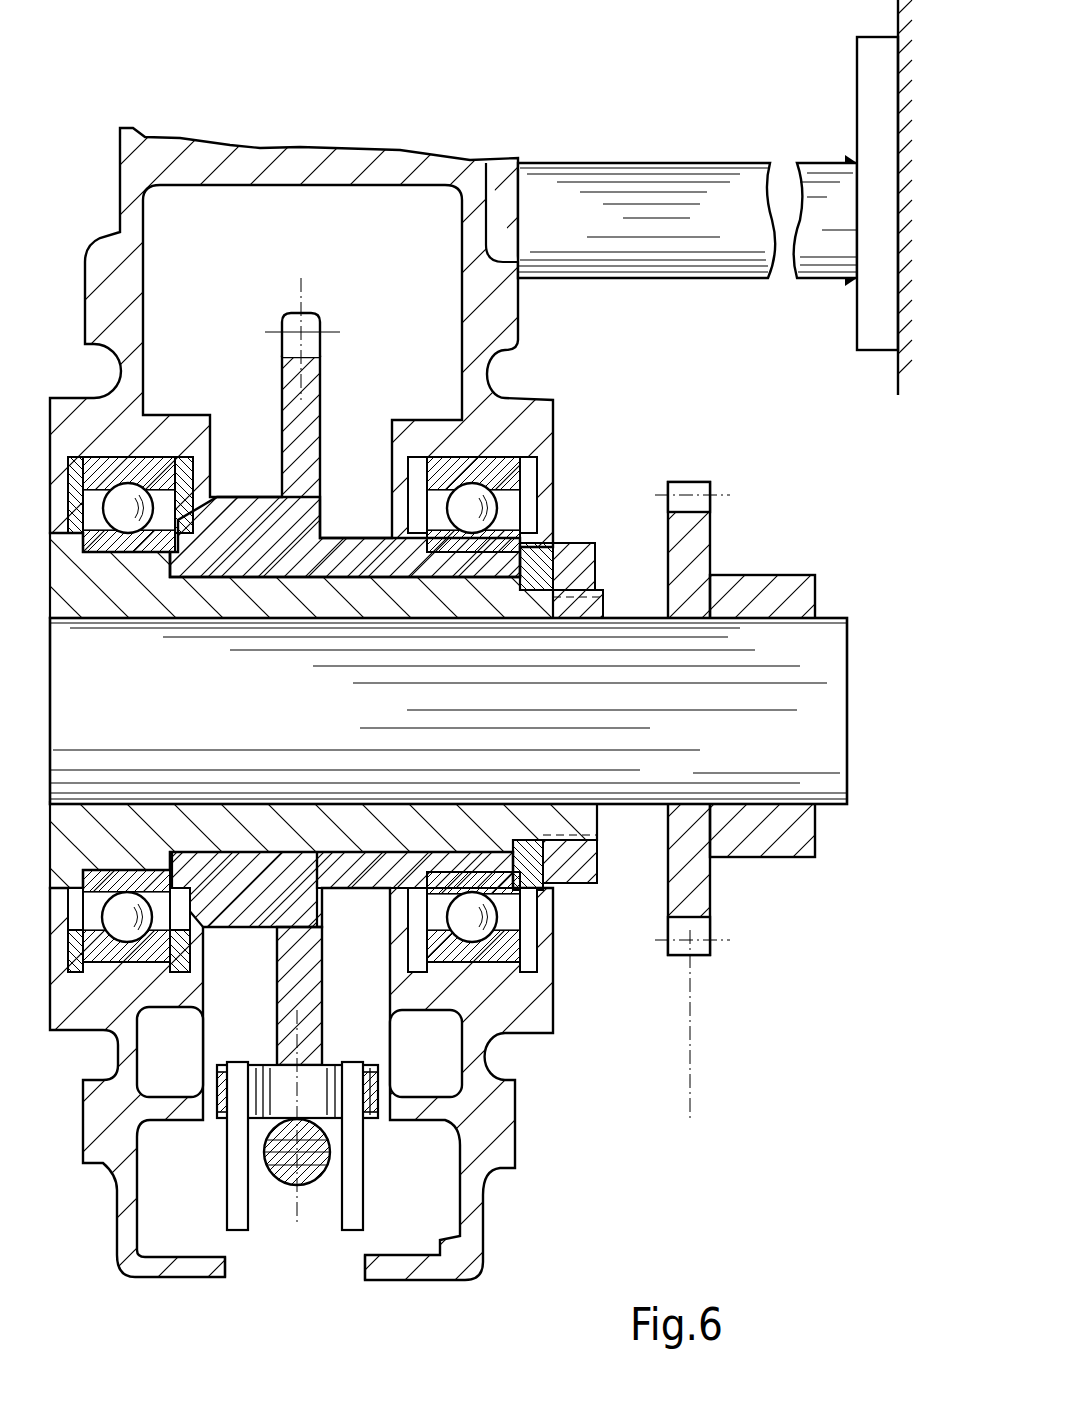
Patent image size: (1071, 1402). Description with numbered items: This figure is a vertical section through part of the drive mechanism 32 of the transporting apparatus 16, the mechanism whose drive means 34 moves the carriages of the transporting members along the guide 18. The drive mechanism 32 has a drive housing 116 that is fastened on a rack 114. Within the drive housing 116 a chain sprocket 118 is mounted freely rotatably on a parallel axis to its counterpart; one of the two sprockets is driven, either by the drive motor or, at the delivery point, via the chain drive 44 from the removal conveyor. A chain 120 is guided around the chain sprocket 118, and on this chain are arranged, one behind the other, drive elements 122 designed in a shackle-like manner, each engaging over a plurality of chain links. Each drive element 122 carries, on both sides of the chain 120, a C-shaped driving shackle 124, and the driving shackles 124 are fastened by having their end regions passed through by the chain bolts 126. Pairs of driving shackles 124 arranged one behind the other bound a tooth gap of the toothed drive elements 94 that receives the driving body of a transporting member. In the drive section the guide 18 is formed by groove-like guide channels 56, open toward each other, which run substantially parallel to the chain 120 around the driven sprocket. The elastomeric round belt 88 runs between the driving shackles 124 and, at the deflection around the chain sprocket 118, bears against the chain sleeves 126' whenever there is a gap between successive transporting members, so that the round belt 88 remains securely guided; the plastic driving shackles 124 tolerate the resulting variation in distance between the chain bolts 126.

The drive housing 116 is at (118, 212).
The drive mechanism 32 is at (296, 146).
The transporting apparatus 16 is at (400, 126).
The rack 114 is at (906, 362).
The chain sprocket 118 is at (322, 395).
The chain drive 44 is at (690, 1002).
The chain bolt 126 is at (265, 1074).
The chain sleeve 126' is at (279, 1022).
The chain 120 is at (332, 1062).
The drive means 34 is at (388, 1092).
The toothed drive element 94 is at (224, 1155).
The drive element 122 is at (224, 1185).
The driving shackle 124 is at (238, 1222).
The round belt 88 is at (312, 1186).
The guide 18 is at (132, 1197).
The guide channel 56 is at (140, 1243).